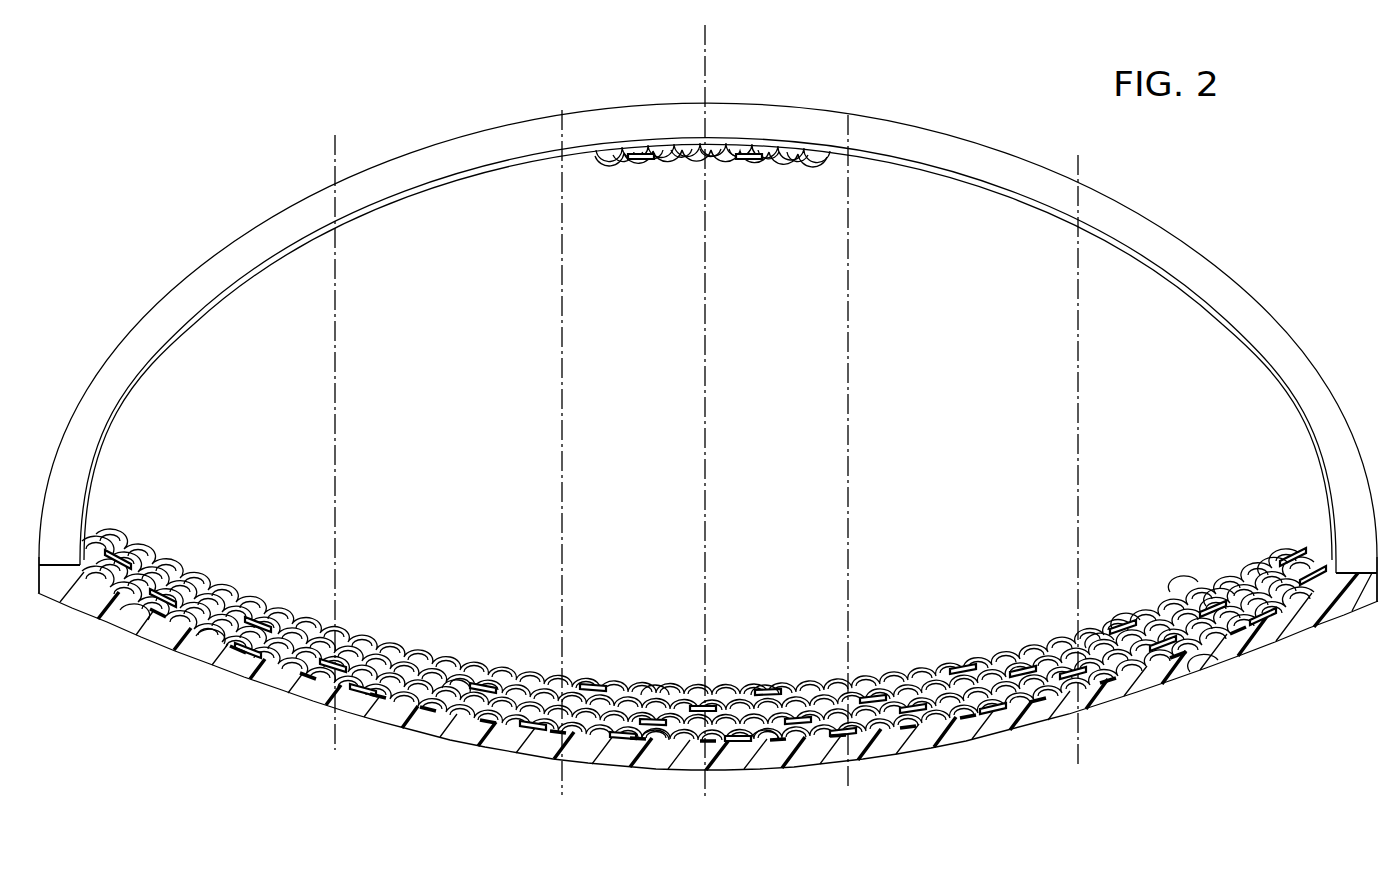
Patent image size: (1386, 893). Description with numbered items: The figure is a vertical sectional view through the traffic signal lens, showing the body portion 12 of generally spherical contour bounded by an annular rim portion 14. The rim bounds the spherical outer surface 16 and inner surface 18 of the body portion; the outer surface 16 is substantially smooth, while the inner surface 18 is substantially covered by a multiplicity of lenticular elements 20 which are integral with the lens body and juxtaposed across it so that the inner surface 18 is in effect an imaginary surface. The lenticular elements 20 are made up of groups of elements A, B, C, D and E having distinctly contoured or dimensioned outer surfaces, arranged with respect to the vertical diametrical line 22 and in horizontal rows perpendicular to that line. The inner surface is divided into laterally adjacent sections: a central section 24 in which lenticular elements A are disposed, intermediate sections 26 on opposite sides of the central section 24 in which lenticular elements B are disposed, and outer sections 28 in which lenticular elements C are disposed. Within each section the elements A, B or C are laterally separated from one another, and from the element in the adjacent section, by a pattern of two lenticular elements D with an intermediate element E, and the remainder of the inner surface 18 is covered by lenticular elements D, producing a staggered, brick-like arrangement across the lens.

The body portion 12 is at (1321, 600).
The annular rim portion 14 is at (1340, 434).
The outer surface 16 is at (952, 750).
The inner surface 18 is at (932, 730).
The lenticular elements 20 is at (396, 648).
The vertical diametrical line 22 is at (707, 50).
The central section 24 is at (630, 198).
The intermediate sections 26 is at (437, 238).
The outer sections 28 is at (194, 368).
The lenticular elements A is at (719, 163).
The lenticular elements B is at (428, 720).
The lenticular elements C is at (185, 633).
The lenticular elements D is at (766, 150).
The lenticular elements E is at (773, 160).